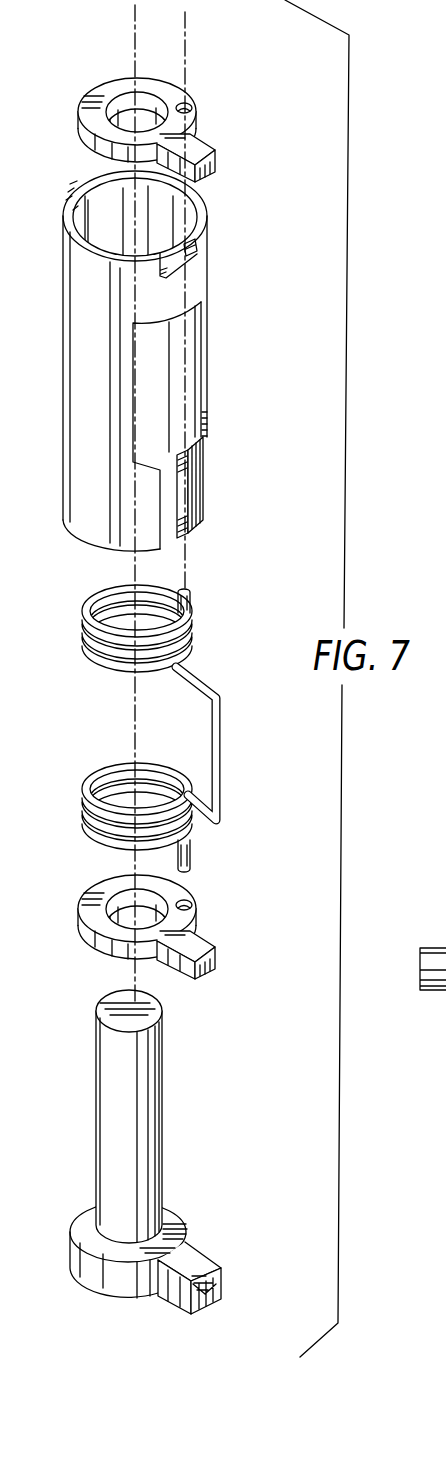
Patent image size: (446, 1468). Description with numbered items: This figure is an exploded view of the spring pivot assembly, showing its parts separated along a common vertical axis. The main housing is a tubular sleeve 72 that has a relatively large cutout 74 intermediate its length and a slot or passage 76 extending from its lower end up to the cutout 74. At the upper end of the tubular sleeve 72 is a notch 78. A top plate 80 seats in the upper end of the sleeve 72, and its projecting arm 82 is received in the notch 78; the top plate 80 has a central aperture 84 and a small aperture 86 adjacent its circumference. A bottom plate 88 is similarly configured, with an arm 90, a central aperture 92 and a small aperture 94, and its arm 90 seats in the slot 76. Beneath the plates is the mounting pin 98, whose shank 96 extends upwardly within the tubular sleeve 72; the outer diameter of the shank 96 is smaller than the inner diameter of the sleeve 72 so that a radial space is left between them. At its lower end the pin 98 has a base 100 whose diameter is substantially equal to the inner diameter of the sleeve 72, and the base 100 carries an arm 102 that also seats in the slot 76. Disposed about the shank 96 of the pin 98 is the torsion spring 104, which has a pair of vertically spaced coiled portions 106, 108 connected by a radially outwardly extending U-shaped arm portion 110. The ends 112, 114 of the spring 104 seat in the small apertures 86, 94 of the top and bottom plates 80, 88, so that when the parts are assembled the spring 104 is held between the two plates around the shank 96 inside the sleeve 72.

The tubular sleeve 72 is at (164, 361).
The cutout 74 is at (203, 370).
The slot 76 is at (187, 498).
The notch 78 is at (192, 249).
The top plate 80 is at (167, 92).
The projecting arm 82 is at (206, 156).
The central aperture 84 is at (124, 97).
The small aperture 86 is at (187, 109).
The bottom plate 88 is at (166, 920).
The arm 90 is at (212, 939).
The central aperture 92 is at (112, 895).
The small aperture 94 is at (187, 906).
The shank 96 is at (165, 1107).
The mounting pin 98 is at (170, 1169).
The base 100 is at (118, 1290).
The arm 102 is at (217, 1281).
The torsion spring 104 is at (175, 728).
The coiled portion 106 is at (110, 667).
The coiled portion 108 is at (118, 766).
The U-shaped arm portion 110 is at (221, 746).
The spring end 112 is at (193, 601).
The spring end 114 is at (191, 849).